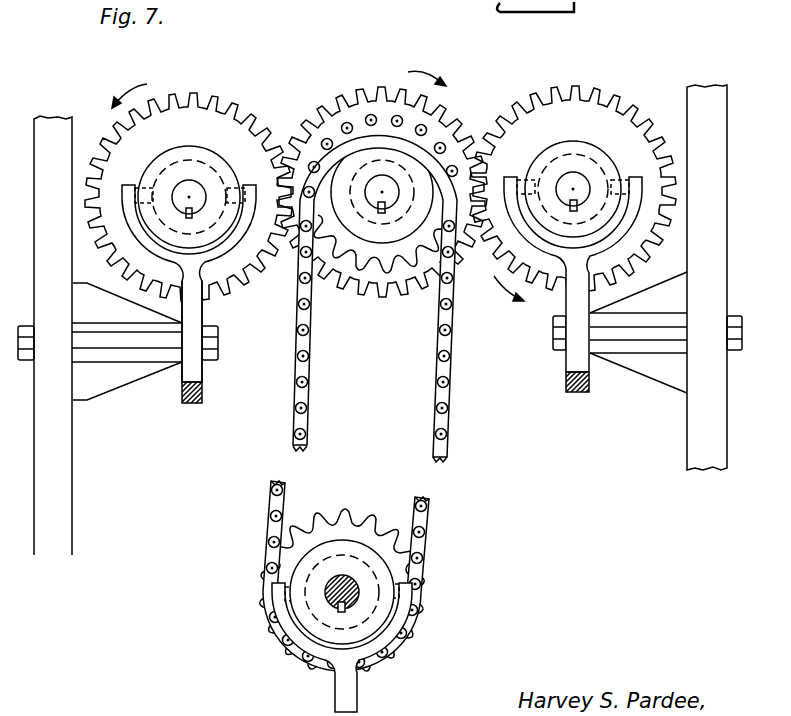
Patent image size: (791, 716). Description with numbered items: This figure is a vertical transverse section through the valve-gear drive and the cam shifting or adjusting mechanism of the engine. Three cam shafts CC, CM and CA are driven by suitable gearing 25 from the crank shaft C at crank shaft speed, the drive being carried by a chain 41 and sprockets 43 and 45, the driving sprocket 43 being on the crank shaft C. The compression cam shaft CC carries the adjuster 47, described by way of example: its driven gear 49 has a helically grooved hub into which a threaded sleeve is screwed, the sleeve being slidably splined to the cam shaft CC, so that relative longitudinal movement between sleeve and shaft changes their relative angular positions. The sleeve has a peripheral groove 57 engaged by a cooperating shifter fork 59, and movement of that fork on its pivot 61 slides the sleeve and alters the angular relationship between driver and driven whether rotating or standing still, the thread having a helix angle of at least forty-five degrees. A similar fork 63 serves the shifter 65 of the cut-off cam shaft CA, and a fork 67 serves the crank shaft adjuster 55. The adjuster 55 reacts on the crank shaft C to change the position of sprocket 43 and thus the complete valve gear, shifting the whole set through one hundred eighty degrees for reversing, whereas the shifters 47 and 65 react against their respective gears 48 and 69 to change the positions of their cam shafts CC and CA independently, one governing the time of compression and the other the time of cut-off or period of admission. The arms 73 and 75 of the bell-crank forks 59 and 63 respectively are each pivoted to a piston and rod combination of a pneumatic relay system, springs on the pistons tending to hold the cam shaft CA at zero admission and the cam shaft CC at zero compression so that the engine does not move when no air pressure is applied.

The gearing 25 is at (224, 468).
The chain 41 is at (427, 518).
The driving sprocket 43 is at (343, 516).
The sprocket 45 is at (340, 282).
The adjuster 47 is at (172, 162).
The gear 48 is at (216, 110).
The driven gear 49 is at (381, 104).
The adjuster 55 is at (378, 566).
The peripheral groove 57 is at (157, 189).
The shifter fork 59 is at (195, 375).
The pivot 61 is at (218, 335).
The fork 63 is at (580, 365).
The shifter 65 is at (563, 166).
The fork 67 is at (350, 690).
The gear 69 is at (586, 112).
The arm 73 is at (182, 400).
The arm 75 is at (582, 393).
The crank shaft C is at (362, 598).
The cam shaft CA is at (577, 177).
The cam shaft CC is at (195, 189).
The cam shaft CM is at (389, 183).